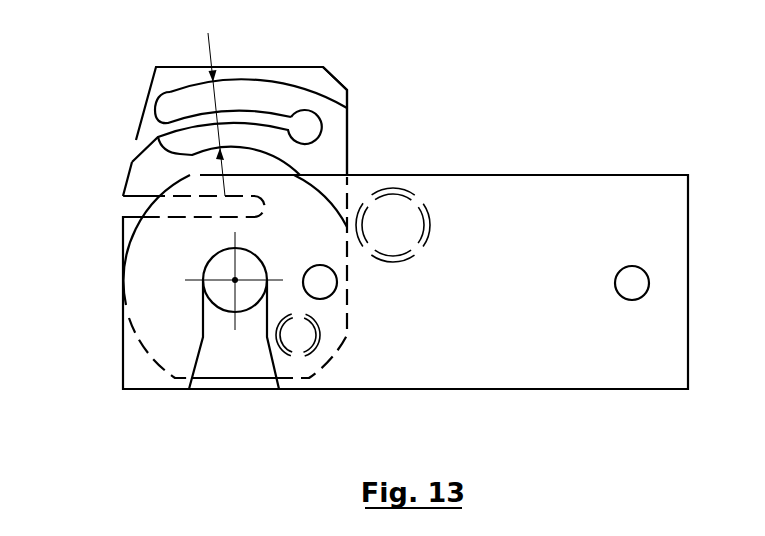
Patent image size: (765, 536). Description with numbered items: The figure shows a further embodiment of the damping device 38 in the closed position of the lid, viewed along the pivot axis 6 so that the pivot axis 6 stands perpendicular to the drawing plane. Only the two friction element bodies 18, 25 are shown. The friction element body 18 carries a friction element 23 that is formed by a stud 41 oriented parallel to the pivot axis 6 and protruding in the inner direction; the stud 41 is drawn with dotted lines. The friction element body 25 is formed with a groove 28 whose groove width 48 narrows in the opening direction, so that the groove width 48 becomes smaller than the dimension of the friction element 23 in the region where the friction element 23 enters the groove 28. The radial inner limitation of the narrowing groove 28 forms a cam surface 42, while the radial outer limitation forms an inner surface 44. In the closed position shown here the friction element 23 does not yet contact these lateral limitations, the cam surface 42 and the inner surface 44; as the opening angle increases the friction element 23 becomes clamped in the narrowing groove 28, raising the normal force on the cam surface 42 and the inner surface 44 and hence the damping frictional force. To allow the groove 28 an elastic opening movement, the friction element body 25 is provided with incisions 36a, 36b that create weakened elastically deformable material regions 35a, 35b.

The pivot axis 6 is at (238, 279).
The friction element body 18 is at (562, 225).
The friction element 23 is at (401, 168).
The friction element body 25 is at (172, 82).
The groove 28 is at (251, 66).
The weakened elastical material region 35a is at (313, 170).
The weakened elastical material region 35b is at (315, 210).
The incision 36a is at (141, 146).
The incision 36b is at (140, 198).
The damping device 38 is at (405, 199).
The stud 41 is at (395, 207).
The cam surface 42 is at (260, 150).
The inner surface 44 is at (289, 88).
The groove width 48 is at (208, 52).